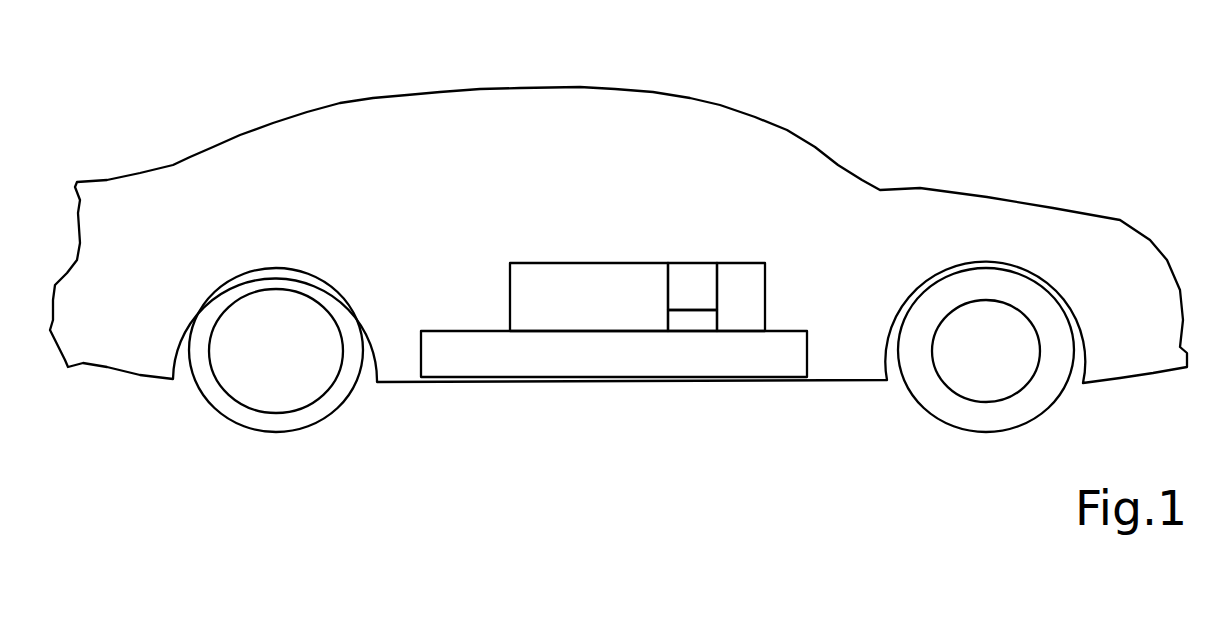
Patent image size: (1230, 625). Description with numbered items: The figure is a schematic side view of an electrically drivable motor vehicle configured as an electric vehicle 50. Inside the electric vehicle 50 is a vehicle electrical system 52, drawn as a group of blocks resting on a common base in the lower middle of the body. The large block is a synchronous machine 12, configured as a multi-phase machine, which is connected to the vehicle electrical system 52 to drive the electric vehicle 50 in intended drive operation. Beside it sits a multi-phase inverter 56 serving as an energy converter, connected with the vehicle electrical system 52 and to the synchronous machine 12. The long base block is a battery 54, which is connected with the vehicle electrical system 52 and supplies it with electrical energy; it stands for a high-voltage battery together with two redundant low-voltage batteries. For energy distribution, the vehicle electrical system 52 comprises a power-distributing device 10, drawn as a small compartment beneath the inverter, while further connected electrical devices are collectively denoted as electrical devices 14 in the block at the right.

The electric vehicle 50 is at (842, 137).
The vehicle electrical system 52 is at (614, 247).
The battery 54 is at (560, 360).
The synchronous machine 12 is at (593, 277).
The multi-phase inverter 56 is at (692, 278).
The power-distributing device 10 is at (690, 320).
The electrical devices 14 is at (743, 282).